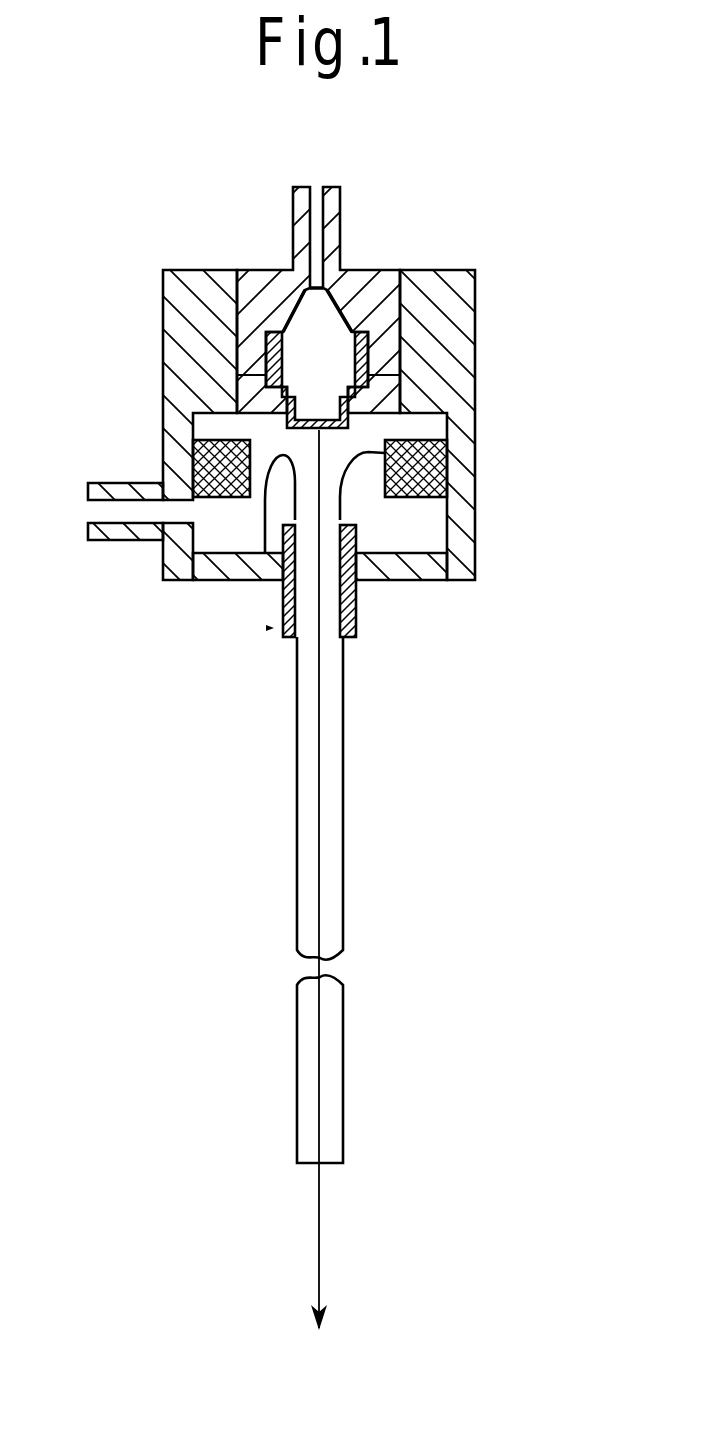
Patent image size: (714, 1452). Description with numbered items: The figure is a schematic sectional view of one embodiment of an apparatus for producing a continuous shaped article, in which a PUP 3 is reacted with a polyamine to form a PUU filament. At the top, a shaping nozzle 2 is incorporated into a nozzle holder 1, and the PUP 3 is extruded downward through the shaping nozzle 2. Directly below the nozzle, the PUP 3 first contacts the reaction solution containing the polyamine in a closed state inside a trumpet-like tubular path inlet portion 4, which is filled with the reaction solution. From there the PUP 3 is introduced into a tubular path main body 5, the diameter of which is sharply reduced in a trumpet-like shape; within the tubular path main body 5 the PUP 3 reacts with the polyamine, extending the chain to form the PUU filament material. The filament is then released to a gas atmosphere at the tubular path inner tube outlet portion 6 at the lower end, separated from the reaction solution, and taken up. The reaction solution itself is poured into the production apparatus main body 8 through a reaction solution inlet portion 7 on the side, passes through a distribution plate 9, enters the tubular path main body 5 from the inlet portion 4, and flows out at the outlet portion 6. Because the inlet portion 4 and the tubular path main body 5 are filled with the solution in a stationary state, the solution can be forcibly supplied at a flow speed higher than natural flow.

The nozzle holder 1 is at (357, 270).
The shaping nozzle 2 is at (348, 424).
The PUP 3 is at (290, 462).
The trumpet-like tubular path inlet portion 4 is at (263, 565).
The tubular path main body 5 is at (345, 792).
The tubular path inner tube outlet portion 6 is at (330, 1161).
The reaction solution inlet portion 7 is at (88, 542).
The production apparatus main body 8 is at (437, 581).
The distribution plate 9 is at (413, 498).